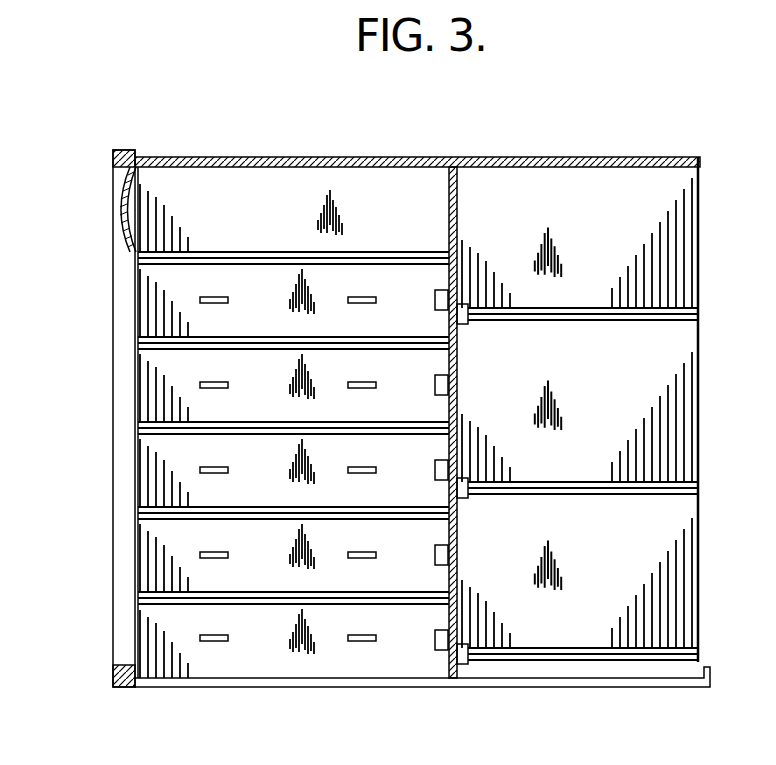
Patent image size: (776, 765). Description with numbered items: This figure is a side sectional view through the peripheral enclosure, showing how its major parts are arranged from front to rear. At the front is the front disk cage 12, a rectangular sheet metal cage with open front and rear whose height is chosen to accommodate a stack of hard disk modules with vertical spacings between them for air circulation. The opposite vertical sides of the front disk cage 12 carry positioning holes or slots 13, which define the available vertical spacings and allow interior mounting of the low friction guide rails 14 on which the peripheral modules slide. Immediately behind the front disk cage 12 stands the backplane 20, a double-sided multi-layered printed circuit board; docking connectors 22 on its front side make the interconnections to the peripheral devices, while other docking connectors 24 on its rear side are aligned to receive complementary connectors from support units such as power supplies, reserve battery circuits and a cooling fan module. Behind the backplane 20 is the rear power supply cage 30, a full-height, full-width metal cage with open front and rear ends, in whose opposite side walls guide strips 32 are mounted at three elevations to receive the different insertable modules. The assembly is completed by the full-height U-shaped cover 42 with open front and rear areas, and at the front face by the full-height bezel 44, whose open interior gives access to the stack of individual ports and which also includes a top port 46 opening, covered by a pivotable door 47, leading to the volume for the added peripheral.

The front disk cage 12 is at (250, 251).
The positioning holes or slots 13 is at (213, 642).
The guide rails 14 is at (321, 600).
The backplane 20 is at (459, 205).
The docking connectors 22 is at (436, 646).
The docking connectors 24 is at (470, 664).
The rear power supply cage 30 is at (665, 440).
The guide strips 32 is at (680, 320).
The U-shaped cover 42 is at (594, 160).
The bezel 44 is at (120, 622).
The top port 46 is at (163, 215).
The pivotable door 47 is at (124, 195).